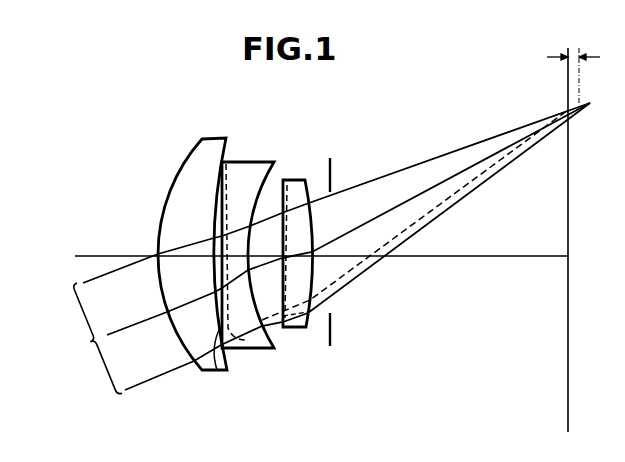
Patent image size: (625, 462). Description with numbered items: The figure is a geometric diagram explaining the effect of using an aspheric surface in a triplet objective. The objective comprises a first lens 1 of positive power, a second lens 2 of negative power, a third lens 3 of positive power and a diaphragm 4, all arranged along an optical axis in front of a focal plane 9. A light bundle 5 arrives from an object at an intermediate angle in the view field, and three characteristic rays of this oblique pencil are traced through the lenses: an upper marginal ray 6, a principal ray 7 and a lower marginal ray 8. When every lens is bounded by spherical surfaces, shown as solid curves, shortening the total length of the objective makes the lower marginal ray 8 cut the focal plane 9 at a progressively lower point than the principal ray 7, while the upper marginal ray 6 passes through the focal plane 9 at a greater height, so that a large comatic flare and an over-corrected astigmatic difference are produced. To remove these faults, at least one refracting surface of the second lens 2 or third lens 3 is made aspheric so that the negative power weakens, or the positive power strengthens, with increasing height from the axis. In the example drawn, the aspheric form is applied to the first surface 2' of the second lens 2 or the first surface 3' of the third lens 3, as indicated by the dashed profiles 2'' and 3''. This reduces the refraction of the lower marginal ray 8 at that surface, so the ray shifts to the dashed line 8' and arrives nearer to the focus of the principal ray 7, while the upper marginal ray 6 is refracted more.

The first lens 1 is at (215, 137).
The second lens 2 is at (248, 233).
The third lens 3 is at (298, 232).
The diaphragm 4 is at (331, 160).
The light bundle 5 is at (95, 340).
The upper marginal ray 6 is at (103, 270).
The principal ray 7 is at (134, 322).
The lower marginal ray 8 is at (357, 246).
The dashed line 8' is at (415, 215).
The focal plane 9 is at (566, 373).
The first surface of the second lens 2' is at (230, 366).
The aspheric first surface of the second lens 2'' is at (253, 280).
The first surface of the third lens 3' is at (293, 279).
The aspheric first surface of the third lens 3'' is at (310, 342).